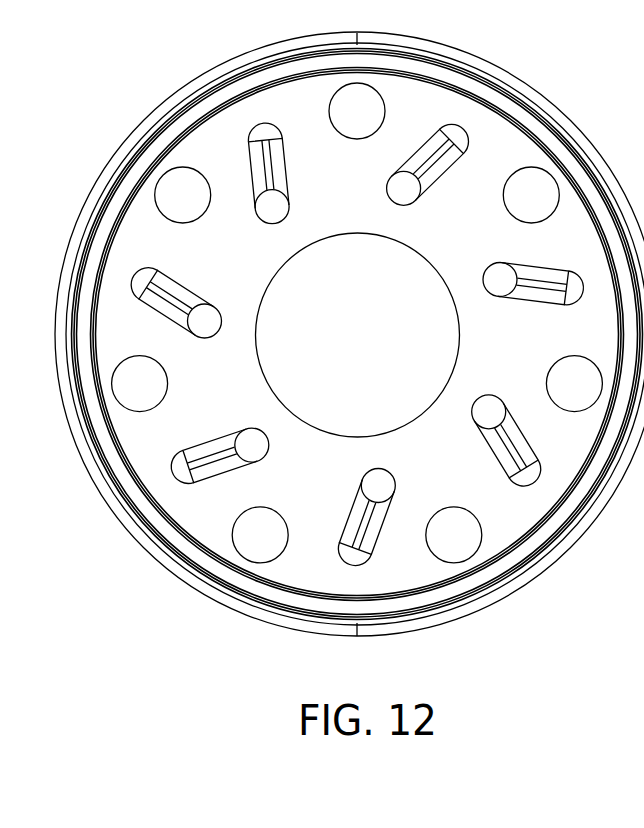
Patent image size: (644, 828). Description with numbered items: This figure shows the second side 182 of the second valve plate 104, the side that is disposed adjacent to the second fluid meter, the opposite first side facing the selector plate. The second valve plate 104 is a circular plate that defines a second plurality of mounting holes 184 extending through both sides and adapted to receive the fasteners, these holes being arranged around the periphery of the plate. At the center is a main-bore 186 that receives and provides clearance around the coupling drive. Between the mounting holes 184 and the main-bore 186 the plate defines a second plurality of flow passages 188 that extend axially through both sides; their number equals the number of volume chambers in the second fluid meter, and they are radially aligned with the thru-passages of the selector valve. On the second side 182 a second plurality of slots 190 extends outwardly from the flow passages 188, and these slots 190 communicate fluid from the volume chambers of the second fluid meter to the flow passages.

The second valve plate 104 is at (604, 107).
The second side 182 is at (483, 237).
The second plurality of mounting holes 184 is at (232, 538).
The main-bore 186 is at (381, 237).
The second plurality of flow passages 188 is at (220, 332).
The second plurality of slots 190 is at (357, 344).